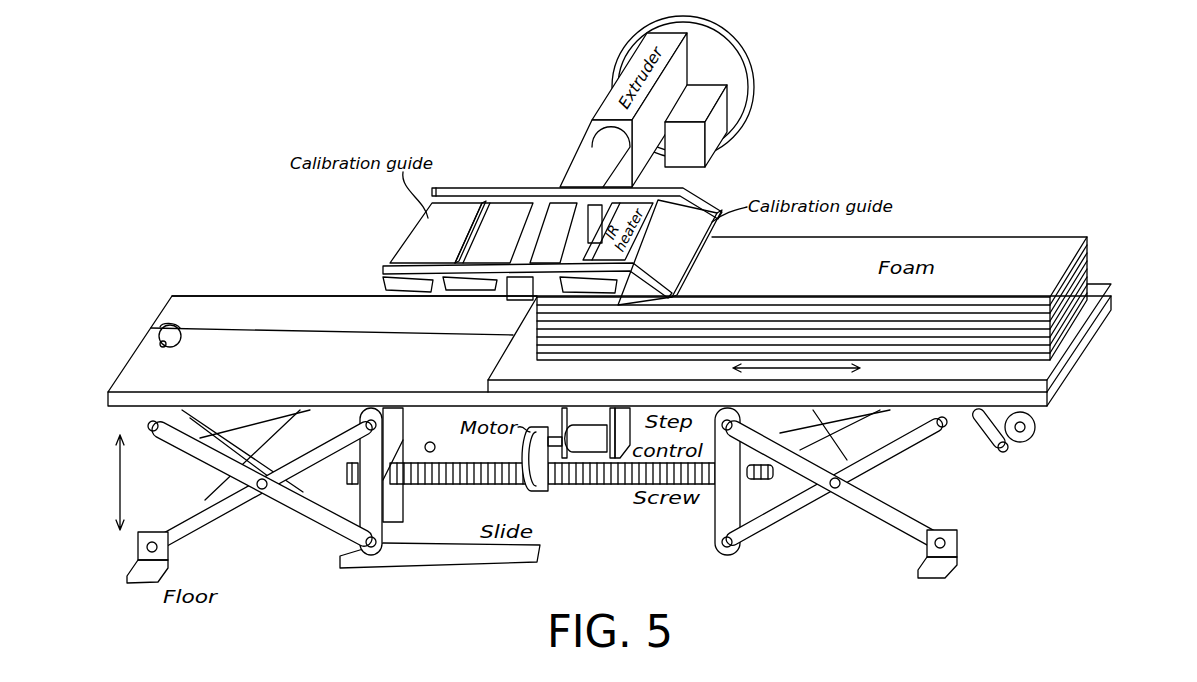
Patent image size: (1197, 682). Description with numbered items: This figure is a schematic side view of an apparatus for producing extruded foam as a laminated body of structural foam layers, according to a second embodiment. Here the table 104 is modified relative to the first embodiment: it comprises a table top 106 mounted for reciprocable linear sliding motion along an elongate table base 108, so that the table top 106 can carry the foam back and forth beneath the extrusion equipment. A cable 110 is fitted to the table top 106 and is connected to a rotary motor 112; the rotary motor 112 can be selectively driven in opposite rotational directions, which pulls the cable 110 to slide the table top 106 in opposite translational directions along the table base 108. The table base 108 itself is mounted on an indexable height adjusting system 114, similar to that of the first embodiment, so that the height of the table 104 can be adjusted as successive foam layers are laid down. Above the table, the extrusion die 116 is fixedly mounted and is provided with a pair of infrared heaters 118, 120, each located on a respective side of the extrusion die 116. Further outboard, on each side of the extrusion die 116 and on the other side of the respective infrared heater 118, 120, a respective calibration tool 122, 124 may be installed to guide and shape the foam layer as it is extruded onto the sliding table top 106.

The table 104 is at (118, 380).
The table top 106 is at (1098, 285).
The table base 108 is at (185, 302).
The cable 110 is at (270, 328).
The rotary motor 112 is at (1040, 430).
The indexable height adjusting system 114 is at (888, 520).
The extrusion die 116 is at (557, 204).
The infrared heater 118 is at (502, 204).
The infrared heater 120 is at (693, 195).
The calibration tool 122 is at (415, 236).
The calibration tool 124 is at (697, 252).